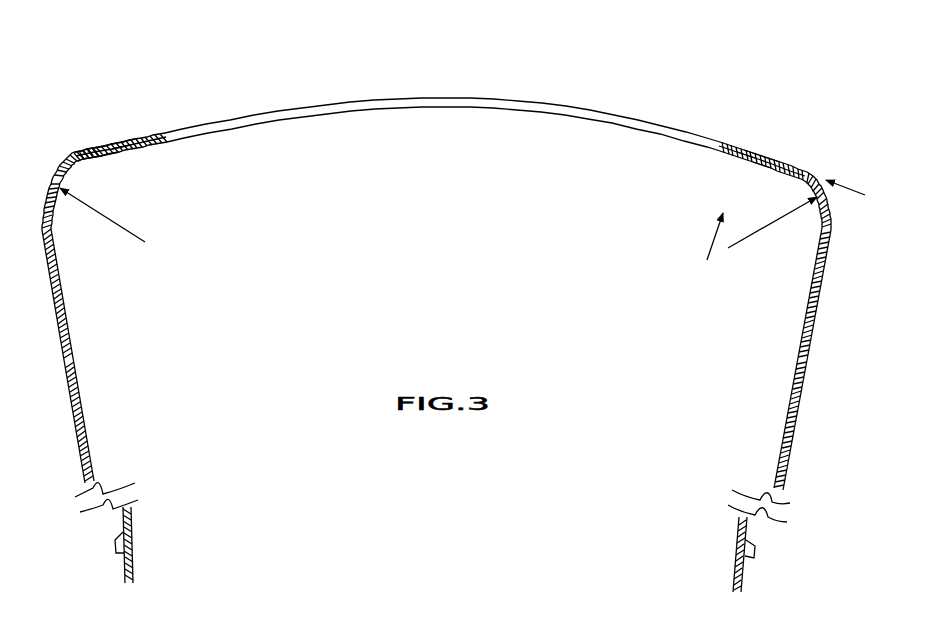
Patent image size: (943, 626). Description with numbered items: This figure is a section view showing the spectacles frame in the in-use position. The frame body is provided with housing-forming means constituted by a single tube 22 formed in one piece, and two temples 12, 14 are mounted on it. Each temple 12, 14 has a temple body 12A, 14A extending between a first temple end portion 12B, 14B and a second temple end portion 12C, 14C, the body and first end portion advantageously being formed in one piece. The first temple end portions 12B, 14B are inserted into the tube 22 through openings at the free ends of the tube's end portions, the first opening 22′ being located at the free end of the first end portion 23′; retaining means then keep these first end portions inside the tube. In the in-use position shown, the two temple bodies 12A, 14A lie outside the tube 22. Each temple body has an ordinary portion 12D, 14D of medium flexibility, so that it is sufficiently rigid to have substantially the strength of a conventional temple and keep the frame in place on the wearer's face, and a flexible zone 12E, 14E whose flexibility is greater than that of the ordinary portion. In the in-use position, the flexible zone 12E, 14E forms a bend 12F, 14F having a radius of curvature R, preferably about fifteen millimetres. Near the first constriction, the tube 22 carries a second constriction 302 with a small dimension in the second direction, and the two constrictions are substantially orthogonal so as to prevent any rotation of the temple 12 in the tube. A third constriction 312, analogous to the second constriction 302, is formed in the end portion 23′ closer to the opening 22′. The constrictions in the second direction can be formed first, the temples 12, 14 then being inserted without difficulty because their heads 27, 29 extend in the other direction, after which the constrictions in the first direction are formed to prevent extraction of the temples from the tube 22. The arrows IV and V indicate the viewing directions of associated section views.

The temple 12 is at (787, 368).
The temple body 12A is at (787, 413).
The first temple end portion 12B is at (742, 147).
The second temple end portion 12C is at (738, 573).
The ordinary portion 12D is at (805, 322).
The flexible zone 12E is at (813, 170).
The bend 12F is at (810, 174).
The temple 14 is at (85, 360).
The temple body 14A is at (80, 410).
The first temple end portion 14B is at (127, 143).
The second temple end portion 14C is at (128, 565).
The ordinary portion 14D is at (65, 312).
The flexible zone 14E is at (72, 150).
The bend 14F is at (58, 192).
The tube 22 is at (427, 102).
The first opening 22′ is at (787, 155).
The first end portion 23′ is at (763, 140).
The head 27 is at (718, 150).
The head 29 is at (162, 143).
The second constriction 302 is at (120, 157).
The third constriction 312 is at (110, 153).
The radius of curvature R is at (118, 226).
The section view direction V is at (845, 181).
The section view direction IV is at (709, 252).